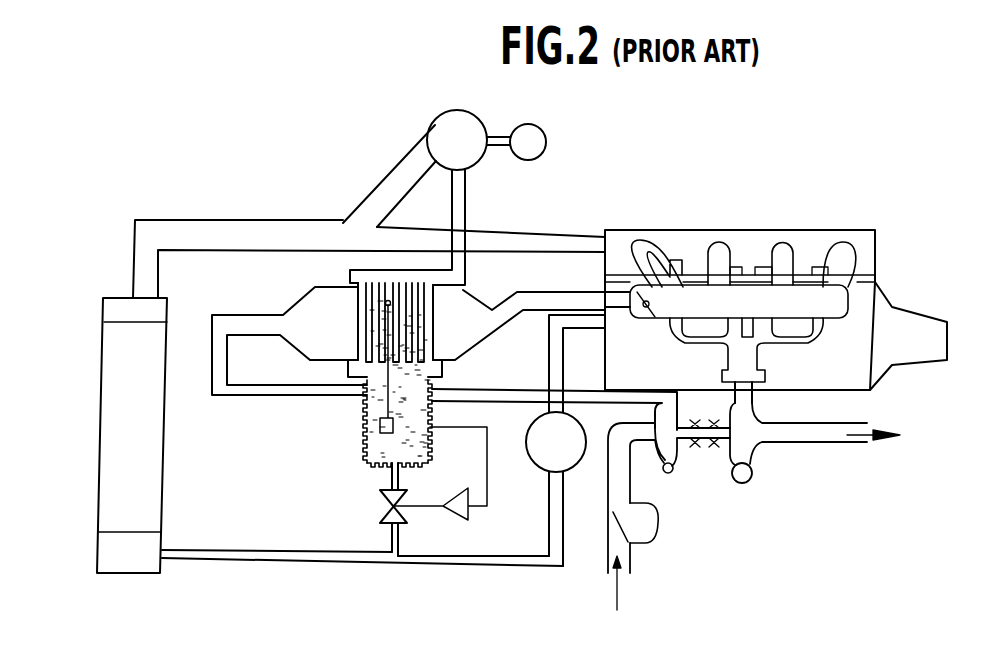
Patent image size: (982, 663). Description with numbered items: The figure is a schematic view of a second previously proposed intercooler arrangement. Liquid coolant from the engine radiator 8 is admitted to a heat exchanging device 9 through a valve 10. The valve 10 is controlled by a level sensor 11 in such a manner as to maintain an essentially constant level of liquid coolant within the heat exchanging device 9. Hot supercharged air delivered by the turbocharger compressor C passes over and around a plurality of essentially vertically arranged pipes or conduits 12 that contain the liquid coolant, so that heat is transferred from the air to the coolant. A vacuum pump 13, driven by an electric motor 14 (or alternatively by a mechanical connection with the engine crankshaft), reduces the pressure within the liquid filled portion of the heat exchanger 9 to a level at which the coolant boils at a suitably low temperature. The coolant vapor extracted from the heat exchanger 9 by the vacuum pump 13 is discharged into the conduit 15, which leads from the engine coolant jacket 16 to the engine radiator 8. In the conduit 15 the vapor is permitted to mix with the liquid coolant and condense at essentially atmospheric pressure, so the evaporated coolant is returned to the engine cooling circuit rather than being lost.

The engine radiator 8 is at (152, 473).
The heat exchanging device 9 is at (373, 415).
The valve 10 is at (383, 520).
The level sensor 11 is at (387, 304).
The pipes or conduits 12 is at (413, 328).
The vacuum pump 13 is at (437, 130).
The electric motor 14 is at (537, 152).
The conduit 15 is at (255, 222).
The engine coolant jacket 16 is at (675, 238).
The turbocharger compressor C is at (673, 472).